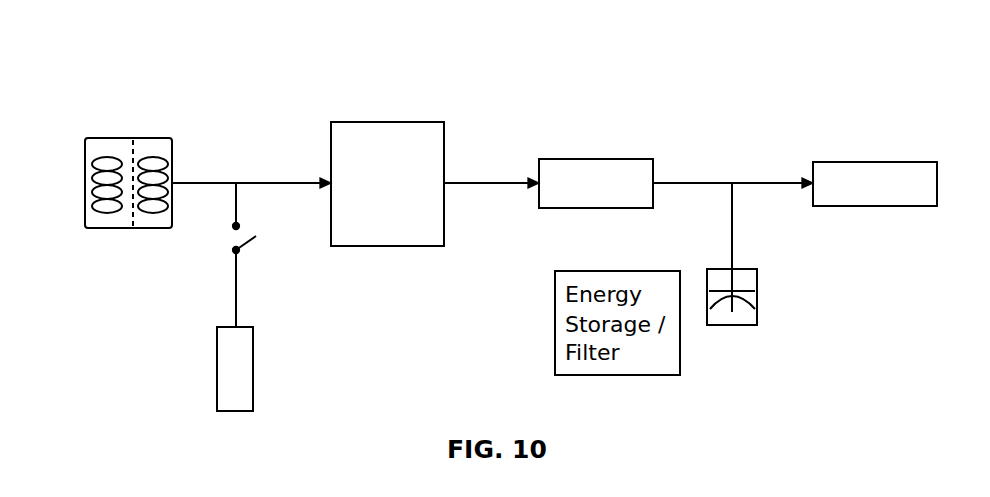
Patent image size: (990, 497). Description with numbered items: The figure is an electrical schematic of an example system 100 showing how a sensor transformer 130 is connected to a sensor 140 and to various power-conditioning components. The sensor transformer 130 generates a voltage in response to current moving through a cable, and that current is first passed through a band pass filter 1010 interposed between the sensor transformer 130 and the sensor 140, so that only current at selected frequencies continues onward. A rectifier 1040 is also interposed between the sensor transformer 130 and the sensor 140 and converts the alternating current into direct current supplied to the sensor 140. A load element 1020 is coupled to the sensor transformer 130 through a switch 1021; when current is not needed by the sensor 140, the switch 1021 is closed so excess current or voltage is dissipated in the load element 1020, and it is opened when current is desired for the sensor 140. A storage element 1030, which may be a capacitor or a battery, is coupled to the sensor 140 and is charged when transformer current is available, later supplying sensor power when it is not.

The system 100 is at (856, 65).
The sensor transformer 130 is at (157, 138).
The band pass filter 1010 is at (426, 122).
The load element 1020 is at (243, 327).
The switch 1021 is at (243, 245).
The storage element 1030 is at (733, 326).
The rectifier 1040 is at (633, 159).
The sensor 140 is at (895, 162).